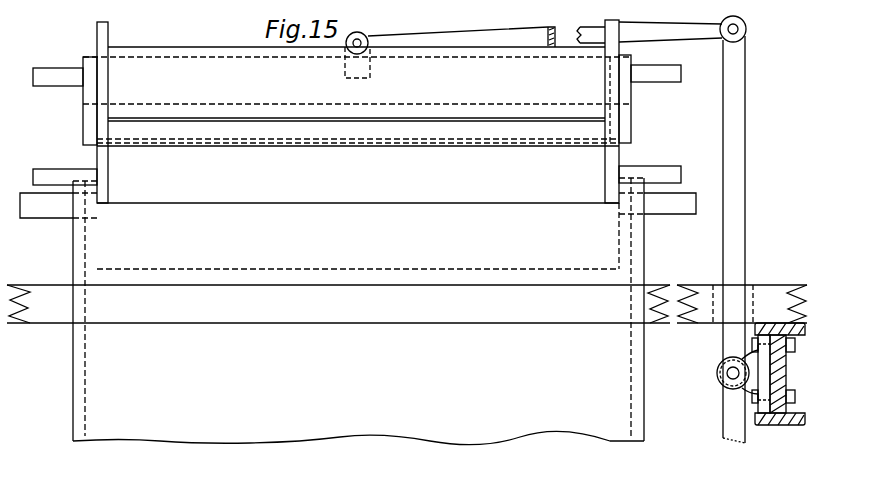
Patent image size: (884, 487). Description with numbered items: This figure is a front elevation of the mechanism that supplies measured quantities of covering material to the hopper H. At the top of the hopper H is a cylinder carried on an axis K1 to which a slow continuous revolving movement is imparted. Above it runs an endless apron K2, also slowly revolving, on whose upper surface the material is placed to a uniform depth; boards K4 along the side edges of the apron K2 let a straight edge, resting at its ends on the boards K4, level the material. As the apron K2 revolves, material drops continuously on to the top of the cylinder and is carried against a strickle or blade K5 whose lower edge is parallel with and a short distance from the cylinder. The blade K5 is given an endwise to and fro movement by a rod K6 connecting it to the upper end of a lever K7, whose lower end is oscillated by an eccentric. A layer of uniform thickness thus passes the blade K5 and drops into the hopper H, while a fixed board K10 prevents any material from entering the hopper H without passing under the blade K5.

The hopper H is at (73, 272).
The axis K1 is at (28, 208).
The endless apron K2 is at (213, 44).
The boards K4 is at (101, 22).
The strickle or blade K5 is at (97, 106).
The rod K6 is at (522, 32).
The lever K7 is at (752, 154).
The fixed board K10 is at (358, 132).